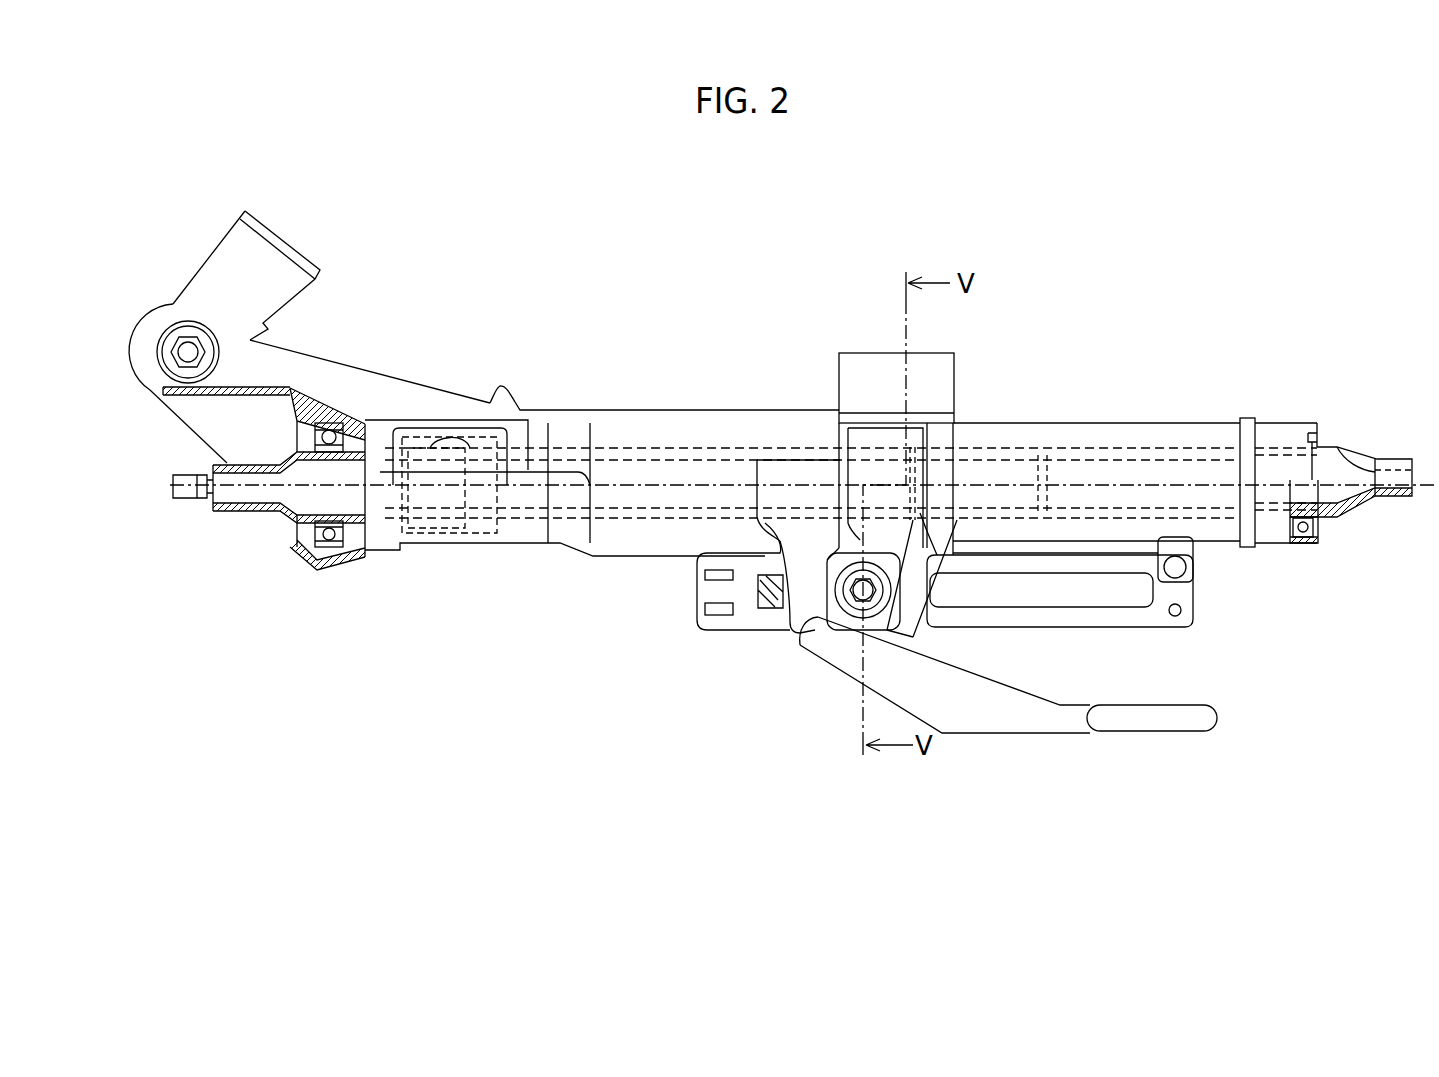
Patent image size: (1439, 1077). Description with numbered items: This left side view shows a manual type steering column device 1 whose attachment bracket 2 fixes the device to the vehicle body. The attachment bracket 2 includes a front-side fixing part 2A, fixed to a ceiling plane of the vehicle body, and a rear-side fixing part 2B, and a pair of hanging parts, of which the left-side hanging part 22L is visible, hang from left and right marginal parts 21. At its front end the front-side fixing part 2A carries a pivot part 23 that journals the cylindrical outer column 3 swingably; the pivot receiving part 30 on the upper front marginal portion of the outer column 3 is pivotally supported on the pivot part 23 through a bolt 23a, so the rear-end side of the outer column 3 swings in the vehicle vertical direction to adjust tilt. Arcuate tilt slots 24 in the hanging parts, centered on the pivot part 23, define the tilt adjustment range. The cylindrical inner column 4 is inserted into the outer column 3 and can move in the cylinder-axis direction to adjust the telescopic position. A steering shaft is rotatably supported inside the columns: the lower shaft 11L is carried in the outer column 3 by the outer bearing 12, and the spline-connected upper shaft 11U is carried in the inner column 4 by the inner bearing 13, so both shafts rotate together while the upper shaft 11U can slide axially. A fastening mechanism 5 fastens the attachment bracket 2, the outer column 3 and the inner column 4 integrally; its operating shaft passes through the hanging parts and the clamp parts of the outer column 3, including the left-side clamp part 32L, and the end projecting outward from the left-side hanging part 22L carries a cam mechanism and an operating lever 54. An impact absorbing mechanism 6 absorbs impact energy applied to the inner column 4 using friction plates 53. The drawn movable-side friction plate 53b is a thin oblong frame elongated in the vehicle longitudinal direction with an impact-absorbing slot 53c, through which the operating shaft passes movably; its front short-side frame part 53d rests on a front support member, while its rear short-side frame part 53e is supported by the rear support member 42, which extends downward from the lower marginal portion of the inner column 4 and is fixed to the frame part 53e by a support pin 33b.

The steering column device 1 is at (1067, 172).
The attachment bracket 2 is at (300, 317).
The front-side fixing part 2A is at (237, 245).
The rear-side fixing part 2B is at (884, 368).
The outer column 3 is at (657, 405).
The inner column 4 is at (1069, 415).
The fastening mechanism 5 is at (981, 579).
The impact absorbing mechanism 6 is at (1070, 648).
The lower shaft 11L is at (210, 510).
The upper shaft 11U is at (1365, 460).
The outer bearing 12 is at (323, 567).
The inner bearing 13 is at (1298, 547).
The marginal parts 21 is at (857, 417).
The left-side hanging part 22L is at (883, 633).
The pivot part 23 is at (168, 352).
The bolt 23a is at (186, 348).
The tilt slots 24 is at (918, 560).
The pivot receiving part 30 is at (300, 362).
The left-side clamp part 32L is at (795, 620).
The support pin 33b is at (1180, 568).
The rear support member 42 is at (1187, 548).
The tooth member 53 is at (945, 609).
The movable-side friction plate 53b is at (1153, 618).
The impact-absorbing slot 53c is at (943, 597).
The front short-side frame part 53d is at (697, 598).
The rear short-side frame part 53e is at (1178, 614).
The operating lever 54 is at (1000, 718).